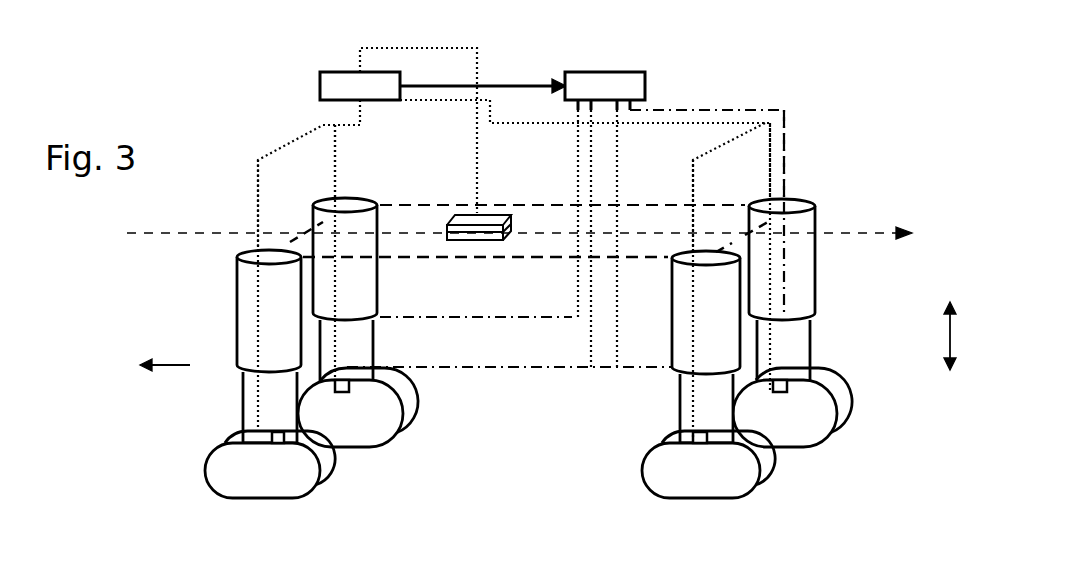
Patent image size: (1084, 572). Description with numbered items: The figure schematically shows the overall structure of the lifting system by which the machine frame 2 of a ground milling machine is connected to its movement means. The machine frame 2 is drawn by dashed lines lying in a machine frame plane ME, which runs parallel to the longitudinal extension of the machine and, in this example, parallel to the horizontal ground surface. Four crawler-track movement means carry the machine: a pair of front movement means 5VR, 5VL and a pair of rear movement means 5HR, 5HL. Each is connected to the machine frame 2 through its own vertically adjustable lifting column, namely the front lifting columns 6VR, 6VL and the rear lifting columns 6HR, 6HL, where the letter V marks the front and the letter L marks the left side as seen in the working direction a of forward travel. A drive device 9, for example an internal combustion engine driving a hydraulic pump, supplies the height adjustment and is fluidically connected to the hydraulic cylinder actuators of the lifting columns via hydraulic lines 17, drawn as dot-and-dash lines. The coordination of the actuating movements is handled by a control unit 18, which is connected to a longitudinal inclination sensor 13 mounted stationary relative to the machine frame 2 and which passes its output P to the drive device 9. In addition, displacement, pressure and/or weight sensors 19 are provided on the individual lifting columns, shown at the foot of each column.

The machine frame 2 is at (432, 202).
The front left movement means 5VL is at (245, 483).
The front right movement means 5VR is at (373, 420).
The rear left movement means 5HL is at (718, 470).
The rear right movement means 5HR is at (808, 418).
The front left lifting column 6VL is at (248, 380).
The front right lifting column 6VR is at (360, 343).
The rear left lifting column 6HL is at (687, 393).
The rear right lifting column 6HR is at (797, 353).
The drive device 9 is at (617, 86).
The longitudinal inclination sensor 13 is at (478, 238).
The hydraulic lines 17 is at (717, 110).
The control unit 18 is at (345, 86).
The displacement and/or pressure and/or weight sensors 19 is at (330, 378).
The parameter signal P is at (500, 84).
The machine frame plane ME is at (513, 227).
The left side designation L is at (531, 236).
The front designation V is at (949, 325).
The working direction a is at (155, 363).